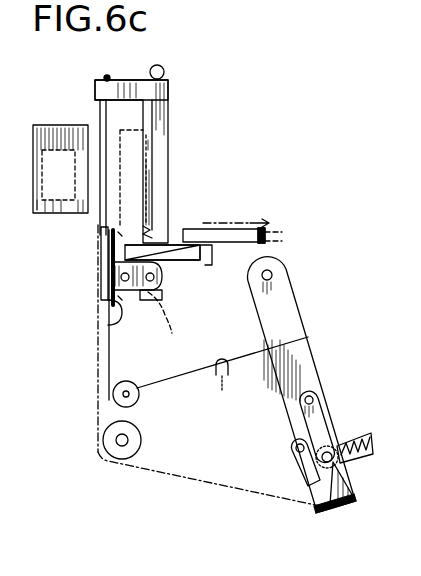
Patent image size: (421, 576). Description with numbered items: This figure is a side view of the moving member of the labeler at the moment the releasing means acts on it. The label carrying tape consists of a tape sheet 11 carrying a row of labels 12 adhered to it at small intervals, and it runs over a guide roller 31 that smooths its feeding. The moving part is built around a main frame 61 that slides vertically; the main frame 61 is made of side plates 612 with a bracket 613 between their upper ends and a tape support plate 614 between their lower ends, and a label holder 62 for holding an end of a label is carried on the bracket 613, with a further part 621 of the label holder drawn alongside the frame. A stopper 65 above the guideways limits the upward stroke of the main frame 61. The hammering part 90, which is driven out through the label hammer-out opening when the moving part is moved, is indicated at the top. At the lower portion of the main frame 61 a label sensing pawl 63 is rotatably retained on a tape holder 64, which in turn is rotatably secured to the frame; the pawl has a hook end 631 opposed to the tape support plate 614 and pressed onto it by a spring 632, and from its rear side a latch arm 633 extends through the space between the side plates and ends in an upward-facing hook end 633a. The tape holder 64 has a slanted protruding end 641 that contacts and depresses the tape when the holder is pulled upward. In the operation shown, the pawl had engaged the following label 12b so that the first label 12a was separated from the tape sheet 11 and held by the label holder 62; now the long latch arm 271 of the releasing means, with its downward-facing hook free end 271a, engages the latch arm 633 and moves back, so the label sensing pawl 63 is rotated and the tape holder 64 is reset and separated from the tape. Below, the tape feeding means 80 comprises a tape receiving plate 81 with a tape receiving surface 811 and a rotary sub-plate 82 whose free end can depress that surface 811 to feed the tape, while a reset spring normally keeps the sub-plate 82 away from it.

The tape sheet 11 is at (157, 392).
The label 12 is at (209, 432).
The first label 12a is at (58, 190).
The following label 12b is at (71, 338).
The guide roller 31 is at (101, 396).
The main frame 61 is at (158, 118).
The label holder 62 is at (107, 74).
The stopper 65 is at (163, 69).
The hammering part 90 is at (133, 235).
The side plate 612 is at (165, 218).
The bracket 613 is at (107, 88).
The rod 621 is at (100, 118).
The hook end 631 is at (107, 215).
The spring 632 is at (158, 210).
The latch arm 633 is at (166, 272).
The hook end 633a is at (222, 270).
The label sensing pawl 63 is at (125, 247).
The tape holder 64 is at (115, 306).
The protruding end 641 is at (108, 282).
The tape support plate 614 is at (110, 327).
The long latch arm 271 is at (255, 245).
The free end 271a is at (208, 222).
The tape feeding means 80 is at (286, 317).
The tape receiving plate 81 is at (345, 482).
The rotary sub-plate 82 is at (318, 482).
The tape receiving surface 811 is at (320, 508).